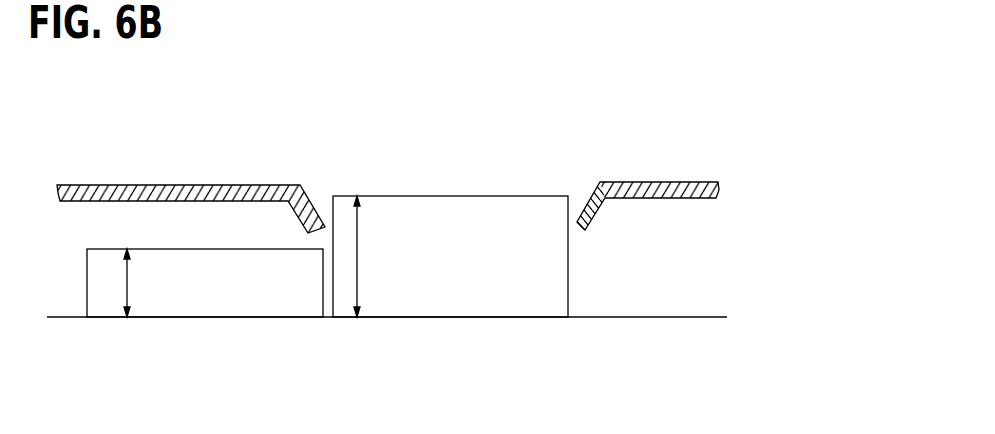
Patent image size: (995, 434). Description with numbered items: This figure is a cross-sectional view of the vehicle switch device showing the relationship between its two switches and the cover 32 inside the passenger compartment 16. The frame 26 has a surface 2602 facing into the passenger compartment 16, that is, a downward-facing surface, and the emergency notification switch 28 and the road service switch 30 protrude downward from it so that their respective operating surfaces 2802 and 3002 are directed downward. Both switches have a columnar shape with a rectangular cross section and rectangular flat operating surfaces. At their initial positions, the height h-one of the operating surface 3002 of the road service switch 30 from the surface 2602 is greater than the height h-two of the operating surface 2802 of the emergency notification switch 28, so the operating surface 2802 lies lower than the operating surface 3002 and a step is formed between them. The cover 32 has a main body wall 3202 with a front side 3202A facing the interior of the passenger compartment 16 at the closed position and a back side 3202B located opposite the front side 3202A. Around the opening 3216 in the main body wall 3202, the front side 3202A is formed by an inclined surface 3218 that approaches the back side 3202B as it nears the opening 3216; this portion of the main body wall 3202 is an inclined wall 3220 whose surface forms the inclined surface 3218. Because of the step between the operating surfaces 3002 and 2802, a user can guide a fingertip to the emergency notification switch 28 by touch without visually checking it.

The passenger compartment 16 is at (305, 67).
The frame 26 is at (415, 201).
The surface 2602 is at (648, 0).
The emergency notification switch 28 is at (205, 215).
The operating surface 2802 is at (217, 249).
The road service switch 30 is at (450, 204).
The operating surface 3002 is at (450, 204).
The cover 32 is at (191, 150).
The main body wall 3202 is at (128, 185).
The front side 3202A is at (644, 220).
The back side 3202B is at (644, 220).
The opening 3216 is at (497, 270).
The inclined surface 3218 is at (583, 198).
The inclined wall 3220 is at (597, 223).